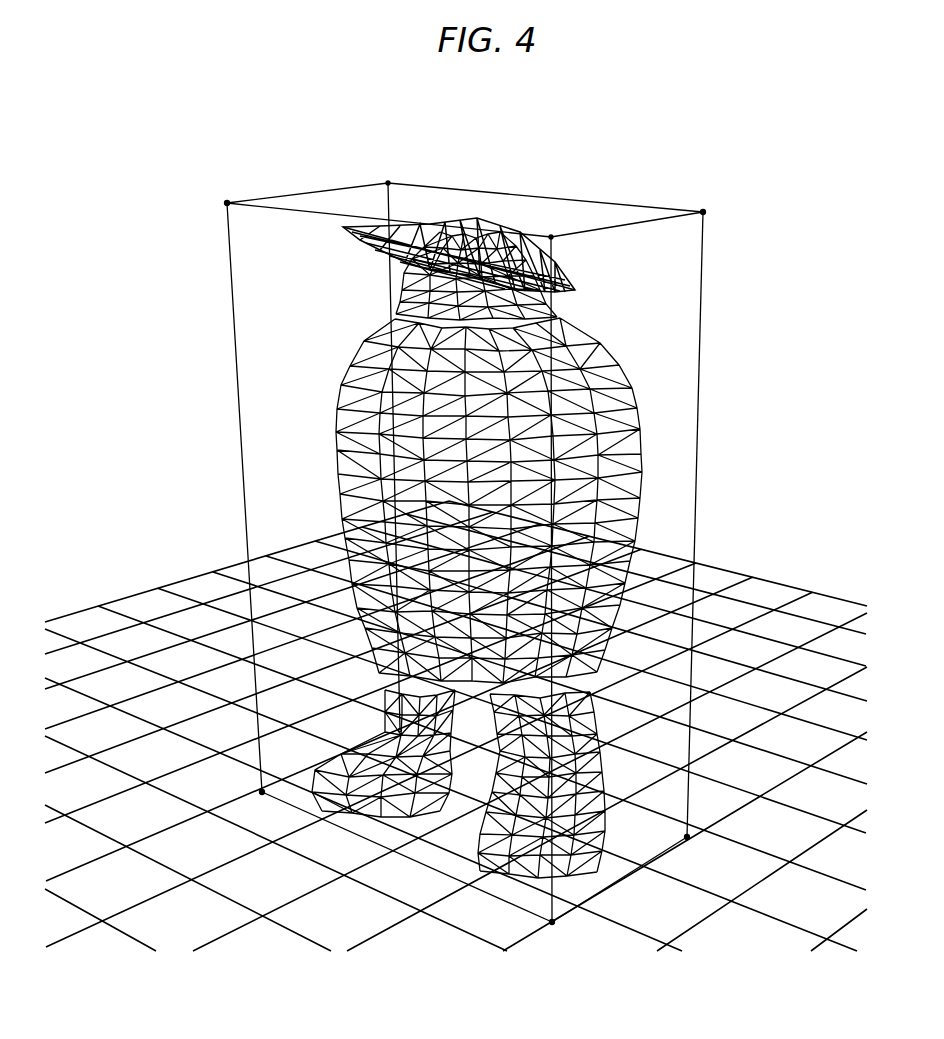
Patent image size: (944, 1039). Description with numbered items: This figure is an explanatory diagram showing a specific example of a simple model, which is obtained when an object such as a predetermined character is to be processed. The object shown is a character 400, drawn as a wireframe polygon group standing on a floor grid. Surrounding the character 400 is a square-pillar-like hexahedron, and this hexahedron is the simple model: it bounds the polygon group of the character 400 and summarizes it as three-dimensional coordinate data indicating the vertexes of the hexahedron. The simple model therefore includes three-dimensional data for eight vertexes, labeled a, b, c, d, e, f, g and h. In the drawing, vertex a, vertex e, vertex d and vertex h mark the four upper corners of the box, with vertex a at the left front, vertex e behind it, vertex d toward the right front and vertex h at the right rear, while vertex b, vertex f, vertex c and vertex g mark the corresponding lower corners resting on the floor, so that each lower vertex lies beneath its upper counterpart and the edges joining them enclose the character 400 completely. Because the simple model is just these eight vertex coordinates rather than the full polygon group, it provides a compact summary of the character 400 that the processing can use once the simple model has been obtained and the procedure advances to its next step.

The character 400 is at (628, 370).
The vertex a is at (227, 203).
The vertex b is at (262, 792).
The vertex c is at (552, 922).
The vertex d is at (551, 237).
The vertex e is at (388, 183).
The vertex f is at (383, 738).
The vertex g is at (687, 837).
The vertex h is at (703, 212).